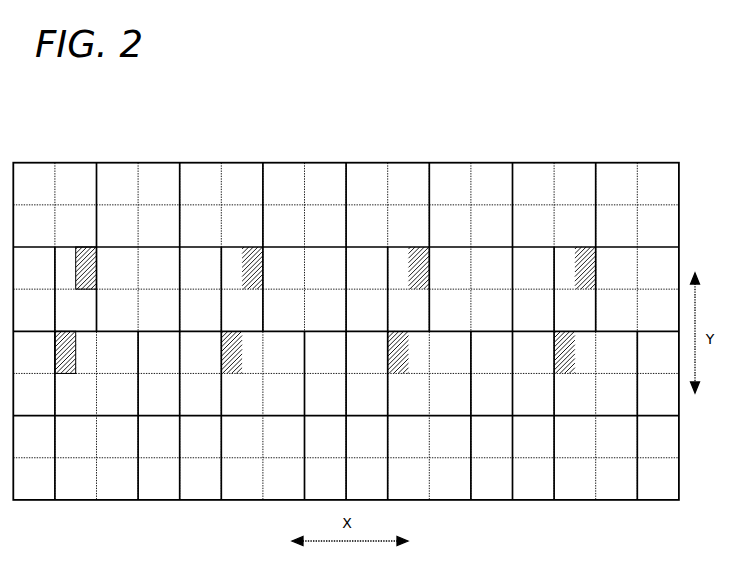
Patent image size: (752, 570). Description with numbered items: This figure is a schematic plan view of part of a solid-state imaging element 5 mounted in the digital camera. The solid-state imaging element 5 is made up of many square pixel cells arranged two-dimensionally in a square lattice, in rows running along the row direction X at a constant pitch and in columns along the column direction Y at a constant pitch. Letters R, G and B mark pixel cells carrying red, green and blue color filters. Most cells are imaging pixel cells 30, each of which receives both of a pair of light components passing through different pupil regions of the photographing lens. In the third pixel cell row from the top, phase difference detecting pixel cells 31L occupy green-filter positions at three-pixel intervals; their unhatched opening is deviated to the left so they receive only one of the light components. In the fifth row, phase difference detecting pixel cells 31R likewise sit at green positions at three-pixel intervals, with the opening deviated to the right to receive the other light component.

The solid-state imaging element 5 is at (590, 103).
The imaging pixel cell 30 is at (201, 161).
The phase difference detecting pixel cell 31L is at (67, 247).
The phase difference detecting pixel cell 31R is at (85, 368).